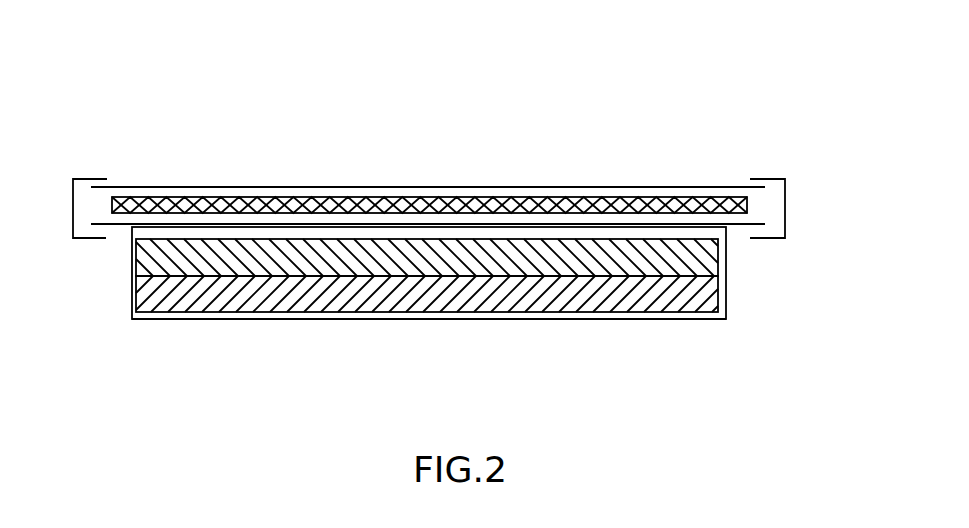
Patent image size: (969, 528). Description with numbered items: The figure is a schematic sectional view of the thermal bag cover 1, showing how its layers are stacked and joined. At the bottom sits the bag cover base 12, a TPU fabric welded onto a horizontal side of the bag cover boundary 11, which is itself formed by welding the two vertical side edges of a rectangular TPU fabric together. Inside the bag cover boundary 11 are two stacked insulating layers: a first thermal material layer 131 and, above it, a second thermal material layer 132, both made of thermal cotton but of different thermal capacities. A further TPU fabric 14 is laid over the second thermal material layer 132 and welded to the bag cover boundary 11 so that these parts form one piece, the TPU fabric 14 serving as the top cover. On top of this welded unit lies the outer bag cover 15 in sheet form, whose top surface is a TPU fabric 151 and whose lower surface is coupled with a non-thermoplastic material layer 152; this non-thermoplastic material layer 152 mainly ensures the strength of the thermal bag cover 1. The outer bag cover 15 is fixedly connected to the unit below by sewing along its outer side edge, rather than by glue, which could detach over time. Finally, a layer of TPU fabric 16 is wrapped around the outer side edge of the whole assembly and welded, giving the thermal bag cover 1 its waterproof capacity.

The thermal bag cover 1 is at (728, 152).
The bag cover boundary 11 is at (726, 276).
The bag cover base 12 is at (625, 320).
The first thermal material layer 131 is at (303, 303).
The second thermal material layer 132 is at (460, 270).
The TPU fabric 14 is at (583, 224).
The outer bag cover 15 is at (382, 62).
The TPU fabric 151 is at (292, 187).
The non-thermoplastic material layer 152 is at (411, 200).
The TPU fabric 16 is at (83, 179).